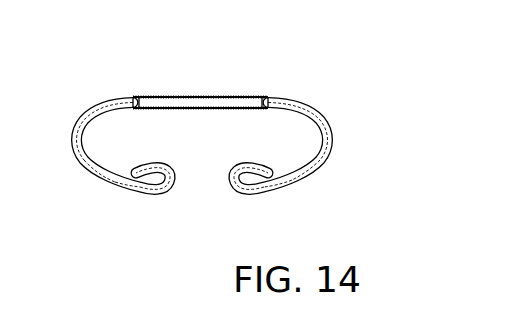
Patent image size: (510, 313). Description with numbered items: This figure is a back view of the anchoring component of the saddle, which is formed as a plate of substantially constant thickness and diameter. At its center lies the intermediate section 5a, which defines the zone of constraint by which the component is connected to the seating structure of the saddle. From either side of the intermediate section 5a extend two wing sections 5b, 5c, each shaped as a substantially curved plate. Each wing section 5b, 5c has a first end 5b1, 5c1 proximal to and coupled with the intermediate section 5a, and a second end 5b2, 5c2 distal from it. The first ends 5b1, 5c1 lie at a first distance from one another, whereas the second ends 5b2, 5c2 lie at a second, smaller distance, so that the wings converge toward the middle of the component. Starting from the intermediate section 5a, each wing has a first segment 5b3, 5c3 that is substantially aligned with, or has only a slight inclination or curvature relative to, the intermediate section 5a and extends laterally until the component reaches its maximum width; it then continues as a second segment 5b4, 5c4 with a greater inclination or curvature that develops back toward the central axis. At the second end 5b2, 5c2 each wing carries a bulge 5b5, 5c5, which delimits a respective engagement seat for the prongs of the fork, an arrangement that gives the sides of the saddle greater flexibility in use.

The intermediate section 5a is at (200, 96).
The wing section 5b is at (92, 164).
The first end 5b1 is at (132, 96).
The second end 5b2 is at (132, 189).
The first segment 5b3 is at (102, 98).
The second segment 5b4 is at (112, 180).
The bulge 5b5 is at (174, 173).
The wing section 5c is at (330, 137).
The first end 5c1 is at (270, 97).
The second end 5c2 is at (278, 187).
The first segment 5c3 is at (308, 100).
The second segment 5c4 is at (327, 150).
The bulge 5c5 is at (243, 193).